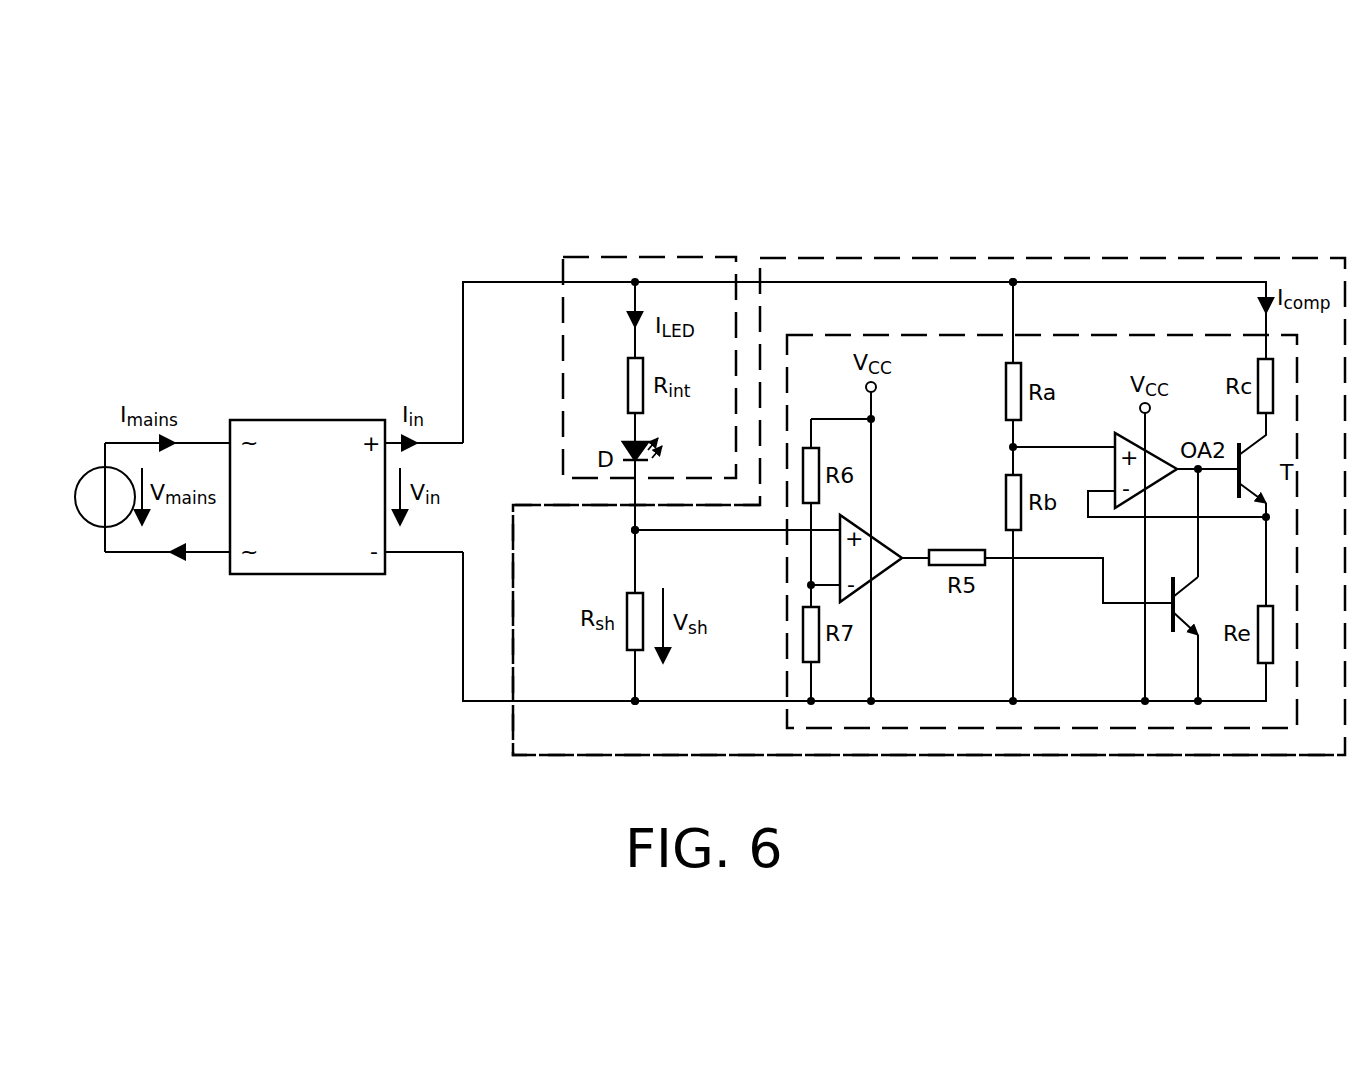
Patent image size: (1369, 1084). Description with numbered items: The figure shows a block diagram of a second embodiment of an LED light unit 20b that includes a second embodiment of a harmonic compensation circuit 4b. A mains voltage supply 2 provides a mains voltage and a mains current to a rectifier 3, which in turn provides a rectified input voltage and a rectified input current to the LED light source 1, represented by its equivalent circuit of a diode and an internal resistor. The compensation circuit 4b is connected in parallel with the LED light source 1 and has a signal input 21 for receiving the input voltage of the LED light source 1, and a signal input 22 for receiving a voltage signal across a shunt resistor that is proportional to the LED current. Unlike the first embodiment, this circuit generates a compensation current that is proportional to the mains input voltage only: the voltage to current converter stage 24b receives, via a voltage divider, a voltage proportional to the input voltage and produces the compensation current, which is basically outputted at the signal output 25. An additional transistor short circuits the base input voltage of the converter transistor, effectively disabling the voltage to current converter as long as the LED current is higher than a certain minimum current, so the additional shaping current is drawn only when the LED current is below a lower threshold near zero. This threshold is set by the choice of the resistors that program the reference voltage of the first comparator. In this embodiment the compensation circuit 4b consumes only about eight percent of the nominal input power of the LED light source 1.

The LED light source 1 is at (650, 257).
The mains voltage supply 2 is at (88, 470).
The rectifier 3 is at (307, 420).
The signal input 21 is at (1013, 282).
The signal input 22 is at (635, 530).
The signal output 25 is at (635, 703).
The compensation circuit 4b is at (985, 755).
The voltage to current converter stage 24b is at (1140, 728).
The LED light unit 20b is at (1250, 205).